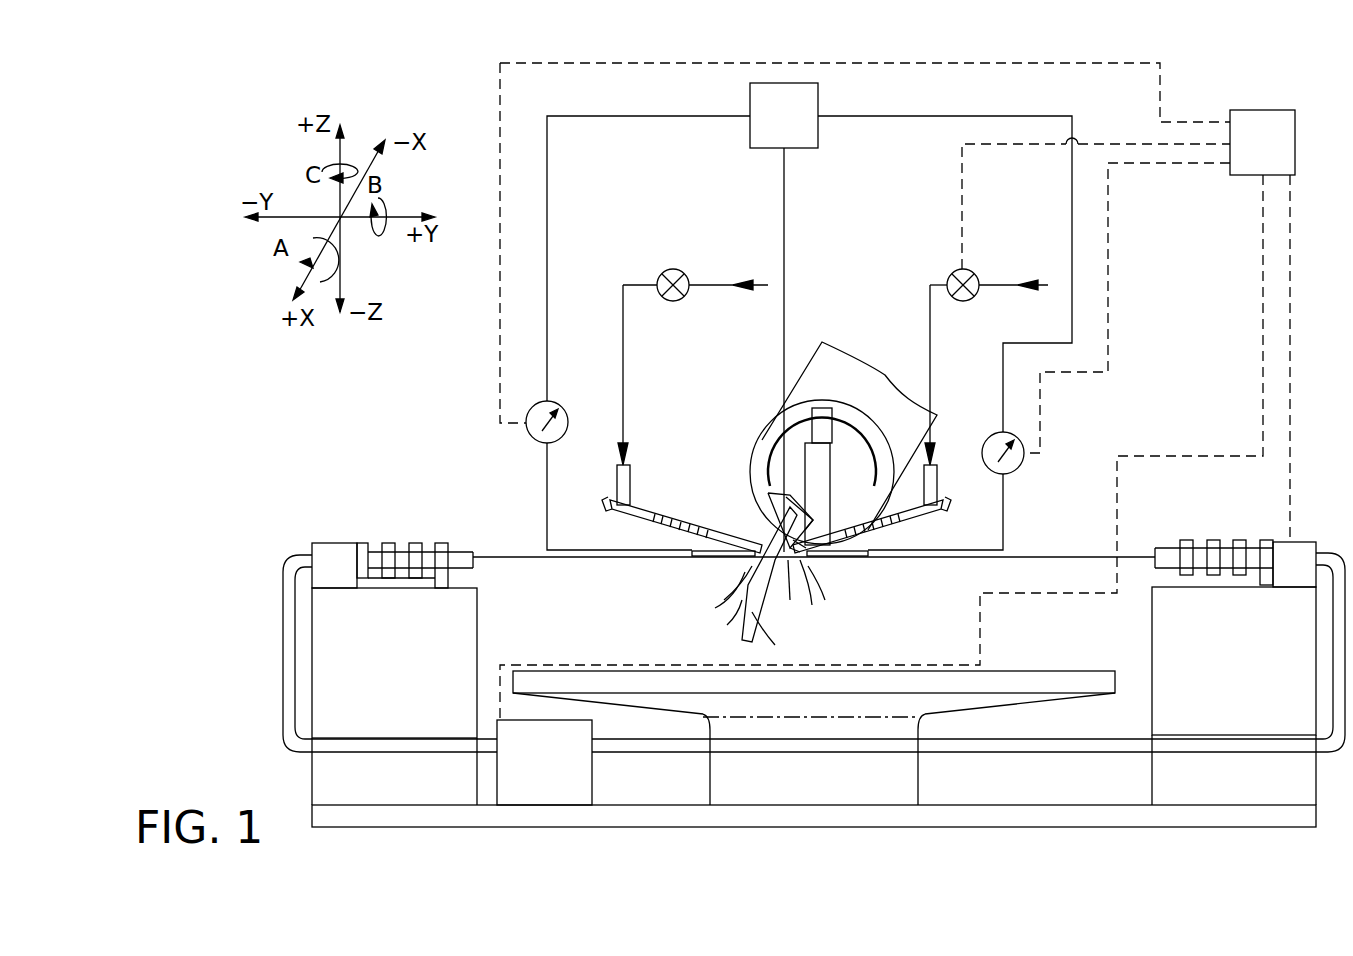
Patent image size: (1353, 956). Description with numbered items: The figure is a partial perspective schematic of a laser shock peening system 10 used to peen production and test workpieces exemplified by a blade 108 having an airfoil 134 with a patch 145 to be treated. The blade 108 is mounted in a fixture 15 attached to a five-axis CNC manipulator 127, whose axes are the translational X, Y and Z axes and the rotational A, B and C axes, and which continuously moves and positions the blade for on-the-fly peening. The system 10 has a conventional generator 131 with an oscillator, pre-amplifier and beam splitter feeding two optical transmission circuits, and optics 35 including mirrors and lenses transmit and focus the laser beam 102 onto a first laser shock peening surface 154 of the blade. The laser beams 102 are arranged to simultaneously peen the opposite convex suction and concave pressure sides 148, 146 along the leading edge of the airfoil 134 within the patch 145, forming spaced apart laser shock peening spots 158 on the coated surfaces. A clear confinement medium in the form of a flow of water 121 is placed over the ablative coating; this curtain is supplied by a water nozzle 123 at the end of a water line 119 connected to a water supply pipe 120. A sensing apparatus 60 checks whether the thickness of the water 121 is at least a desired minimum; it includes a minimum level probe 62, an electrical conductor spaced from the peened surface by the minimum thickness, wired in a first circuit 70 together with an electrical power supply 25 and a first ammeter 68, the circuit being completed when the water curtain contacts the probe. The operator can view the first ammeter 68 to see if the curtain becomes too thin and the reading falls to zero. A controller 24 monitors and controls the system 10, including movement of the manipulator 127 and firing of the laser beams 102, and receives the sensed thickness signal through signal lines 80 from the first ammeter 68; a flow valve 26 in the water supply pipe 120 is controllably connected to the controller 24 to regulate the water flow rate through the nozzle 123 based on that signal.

The laser shock peening system 10 is at (1071, 443).
The fixture 15 is at (752, 455).
The controller 24 is at (1262, 142).
The electrical power supply 25 is at (784, 115).
The flow valve 26 is at (951, 274).
The optics 35 is at (388, 543).
The sensing apparatus 60 is at (1012, 497).
The minimum level probe 62 is at (870, 551).
The first ammeter 68 is at (988, 440).
The first circuit 70 is at (1003, 353).
The signal lines 80 is at (1160, 85).
The laser beam 102 is at (525, 557).
The blade 108 is at (738, 610).
The water line 119 is at (623, 320).
The water supply pipe 120 is at (706, 278).
The flow of water 121 is at (718, 588).
The water nozzle 123 is at (815, 512).
The five-axis CNC manipulator 127 is at (820, 340).
The generator 131 is at (544, 762).
The airfoil 134 is at (792, 580).
The patch 145 is at (760, 514).
The concave pressure side 146 is at (760, 620).
The convex suction side 148 is at (735, 630).
The first laser shock peening surface 154 is at (818, 480).
The laser shock peening spots 158 is at (805, 565).